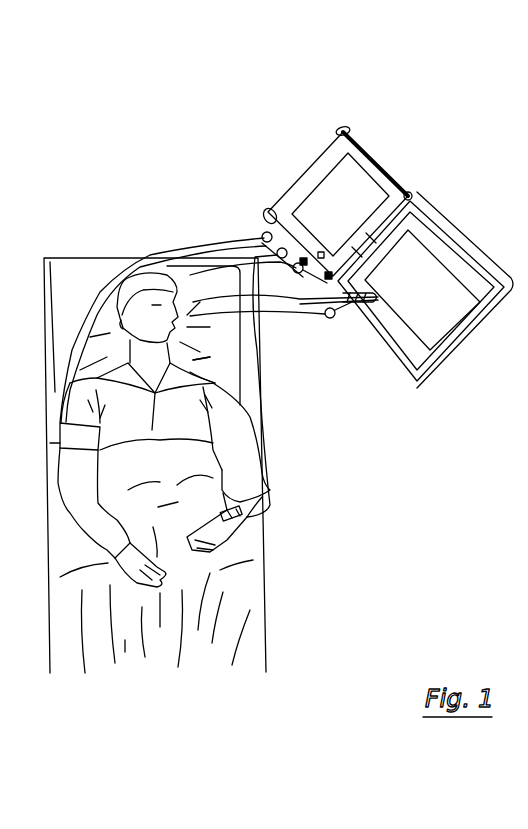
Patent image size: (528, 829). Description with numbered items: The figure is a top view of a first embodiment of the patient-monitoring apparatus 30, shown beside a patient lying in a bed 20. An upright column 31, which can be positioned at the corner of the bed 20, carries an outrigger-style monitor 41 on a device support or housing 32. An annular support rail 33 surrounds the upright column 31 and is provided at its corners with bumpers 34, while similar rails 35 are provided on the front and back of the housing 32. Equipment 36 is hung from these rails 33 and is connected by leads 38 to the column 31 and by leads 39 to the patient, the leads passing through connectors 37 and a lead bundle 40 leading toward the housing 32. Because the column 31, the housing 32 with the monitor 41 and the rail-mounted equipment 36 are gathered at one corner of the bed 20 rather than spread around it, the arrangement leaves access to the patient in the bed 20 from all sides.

The bed 20 is at (243, 536).
The monitoring device 30 is at (380, 254).
The upright column 31 is at (367, 187).
The device support or housing 32 is at (462, 333).
The annular support rail 33 is at (328, 142).
The bumpers 34 is at (343, 127).
The rails 35 is at (395, 373).
The equipment 36 is at (262, 226).
The cable connectors 37 is at (320, 268).
The leads 38 is at (328, 274).
The leads 39 is at (186, 310).
The cable bundle to second panel 40 is at (375, 302).
The outrigger-style monitor 41 is at (402, 299).